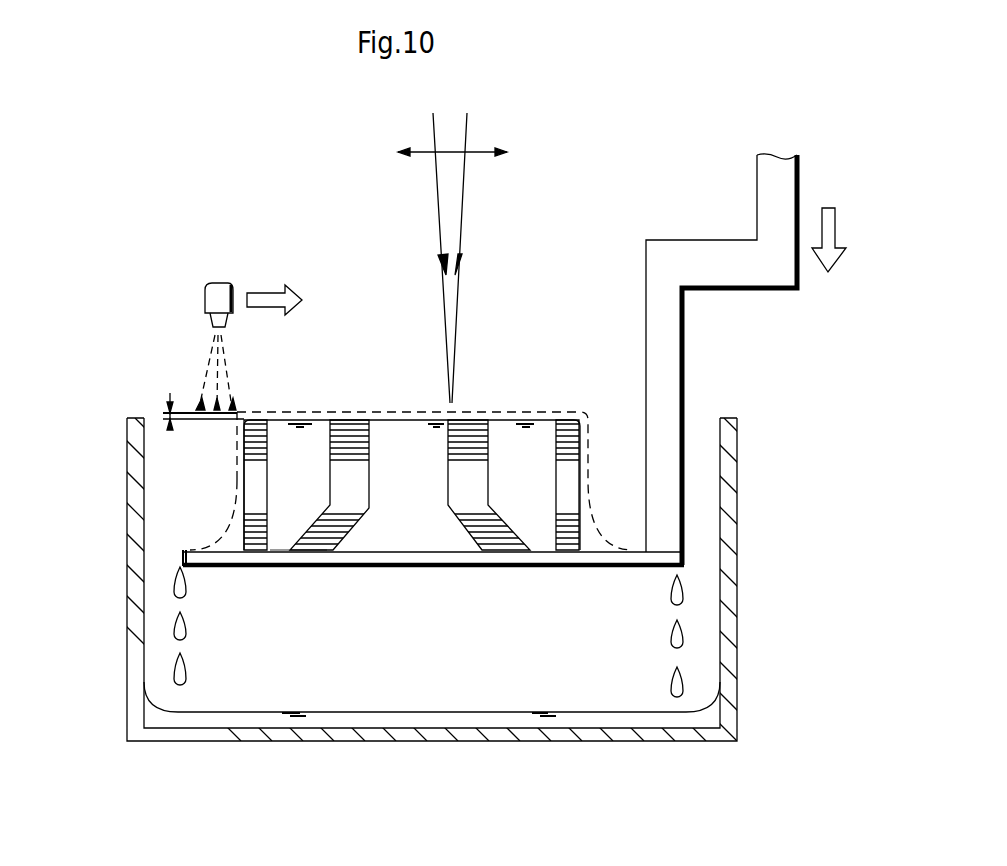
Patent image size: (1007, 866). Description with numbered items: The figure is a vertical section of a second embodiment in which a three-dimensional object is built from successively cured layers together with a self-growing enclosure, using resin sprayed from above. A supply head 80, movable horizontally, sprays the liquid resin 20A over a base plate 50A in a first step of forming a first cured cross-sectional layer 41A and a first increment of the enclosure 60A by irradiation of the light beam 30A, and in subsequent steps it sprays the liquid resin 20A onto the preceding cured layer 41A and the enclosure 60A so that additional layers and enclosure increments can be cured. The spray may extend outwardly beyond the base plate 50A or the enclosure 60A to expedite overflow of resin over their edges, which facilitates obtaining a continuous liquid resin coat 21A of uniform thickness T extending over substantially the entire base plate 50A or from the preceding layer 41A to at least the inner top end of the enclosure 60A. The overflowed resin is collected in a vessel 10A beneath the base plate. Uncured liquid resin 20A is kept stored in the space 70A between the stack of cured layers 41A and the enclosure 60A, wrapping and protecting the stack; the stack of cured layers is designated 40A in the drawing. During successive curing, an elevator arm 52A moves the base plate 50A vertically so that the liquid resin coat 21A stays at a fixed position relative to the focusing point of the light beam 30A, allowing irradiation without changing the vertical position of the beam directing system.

The vessel 10A is at (732, 525).
The liquid resin 20A is at (170, 722).
The liquid resin coat 21A is at (382, 412).
The light beam 30A is at (458, 187).
The cured resin layer 40A is at (357, 525).
The cured cross-sectional layer 41A is at (478, 420).
The base plate 50A is at (445, 560).
The elevator arm 52A is at (677, 240).
The self-growing enclosure 60A is at (250, 493).
The space 70A is at (288, 512).
The supply head 80 is at (207, 292).
The thickness T is at (157, 405).